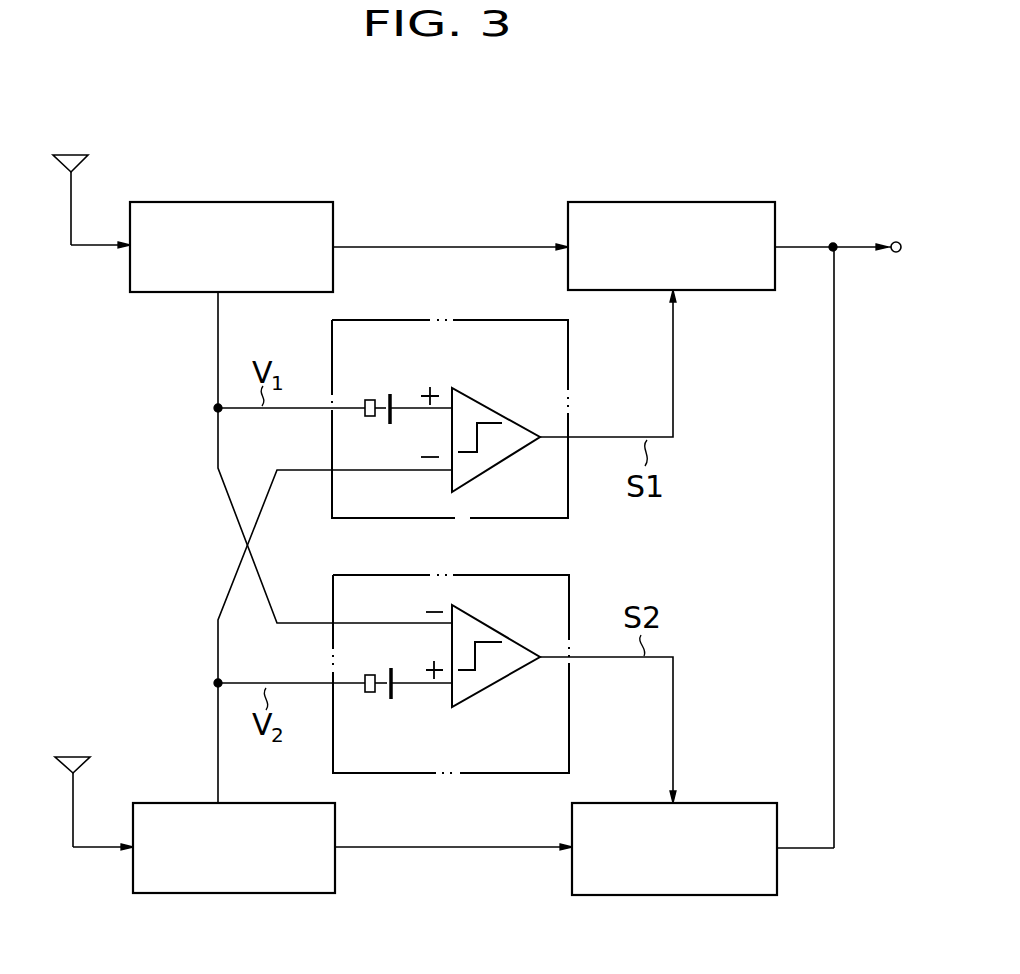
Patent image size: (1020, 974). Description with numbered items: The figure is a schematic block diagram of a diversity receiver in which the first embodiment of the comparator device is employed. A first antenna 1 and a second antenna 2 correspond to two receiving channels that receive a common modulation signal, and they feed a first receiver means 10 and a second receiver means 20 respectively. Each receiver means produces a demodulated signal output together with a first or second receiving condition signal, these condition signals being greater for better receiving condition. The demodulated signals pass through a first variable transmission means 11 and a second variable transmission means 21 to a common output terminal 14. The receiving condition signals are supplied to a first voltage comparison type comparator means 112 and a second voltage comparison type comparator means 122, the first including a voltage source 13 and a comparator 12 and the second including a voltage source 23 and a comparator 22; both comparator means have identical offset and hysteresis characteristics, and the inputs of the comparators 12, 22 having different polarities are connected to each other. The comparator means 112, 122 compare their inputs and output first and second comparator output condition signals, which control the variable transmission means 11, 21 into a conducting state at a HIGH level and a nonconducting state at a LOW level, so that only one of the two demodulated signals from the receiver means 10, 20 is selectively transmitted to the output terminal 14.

The first antenna 1 is at (78, 155).
The second antenna 2 is at (82, 757).
The first receiver means 10 is at (224, 202).
The first variable transmission means 11 is at (673, 202).
The first comparator 12 is at (490, 406).
The first voltage source 13 is at (378, 394).
The common output terminal 14 is at (895, 241).
The second receiver means 20 is at (238, 895).
The second variable transmission means 21 is at (679, 897).
The second comparator 22 is at (507, 677).
The second voltage source 23 is at (382, 702).
The first voltage comparison type comparator means 112 is at (493, 318).
The second voltage comparison type comparator means 122 is at (495, 775).